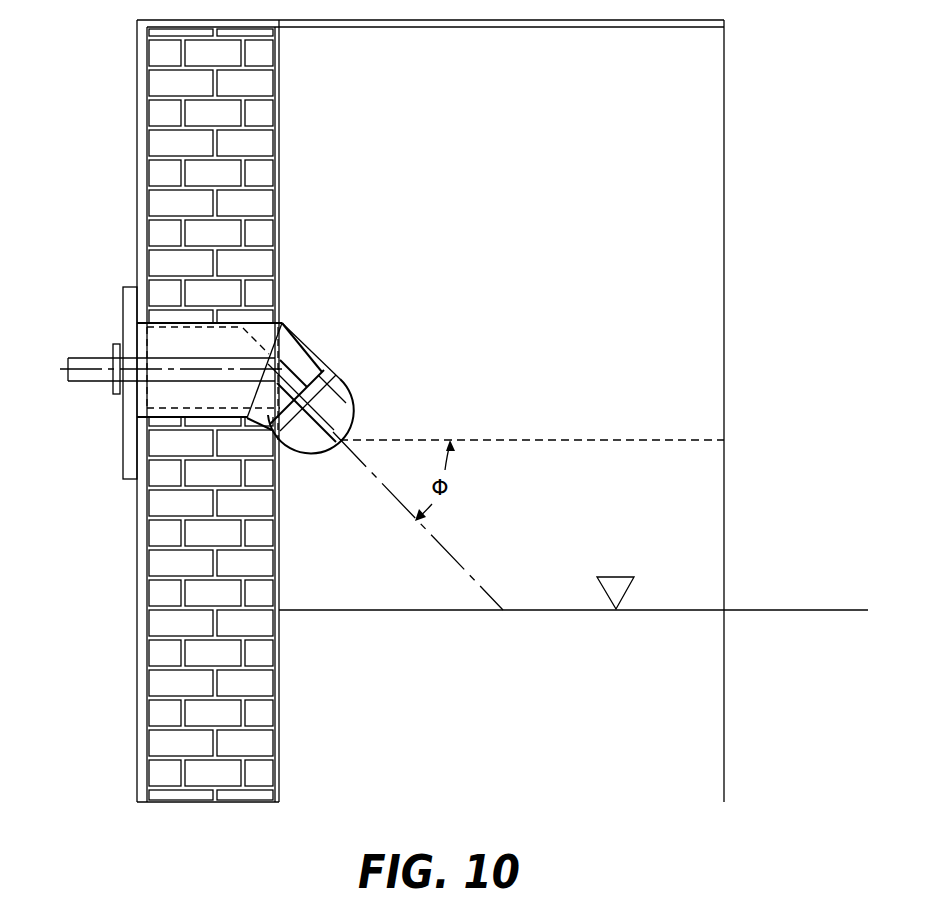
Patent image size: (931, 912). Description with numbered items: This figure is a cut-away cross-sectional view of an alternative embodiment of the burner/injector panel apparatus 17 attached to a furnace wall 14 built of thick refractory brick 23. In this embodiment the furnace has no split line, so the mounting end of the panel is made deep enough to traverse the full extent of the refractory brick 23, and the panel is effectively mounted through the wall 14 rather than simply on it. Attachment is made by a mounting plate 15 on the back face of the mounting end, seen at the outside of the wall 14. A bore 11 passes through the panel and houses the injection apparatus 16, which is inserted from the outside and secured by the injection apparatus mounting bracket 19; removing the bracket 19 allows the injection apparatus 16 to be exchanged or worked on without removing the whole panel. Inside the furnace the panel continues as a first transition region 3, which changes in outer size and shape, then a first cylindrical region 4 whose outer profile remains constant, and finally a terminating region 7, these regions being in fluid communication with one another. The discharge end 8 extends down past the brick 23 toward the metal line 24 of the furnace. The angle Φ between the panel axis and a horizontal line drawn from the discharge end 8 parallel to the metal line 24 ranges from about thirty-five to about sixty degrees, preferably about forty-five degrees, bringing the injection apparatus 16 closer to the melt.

The first transition region 3 is at (318, 357).
The first cylindrical region 4 is at (338, 373).
The terminating region 7 is at (352, 398).
The discharge end 8 is at (347, 438).
The bore 11 is at (158, 398).
The furnace wall 14 is at (137, 232).
The mounting plate 15 is at (126, 290).
The injection apparatus 16 is at (78, 357).
The burner/injector panel apparatus 17 is at (329, 372).
The injection apparatus mounting bracket 19 is at (110, 388).
The refractory brick 23 is at (178, 202).
The metal line 24 is at (673, 608).